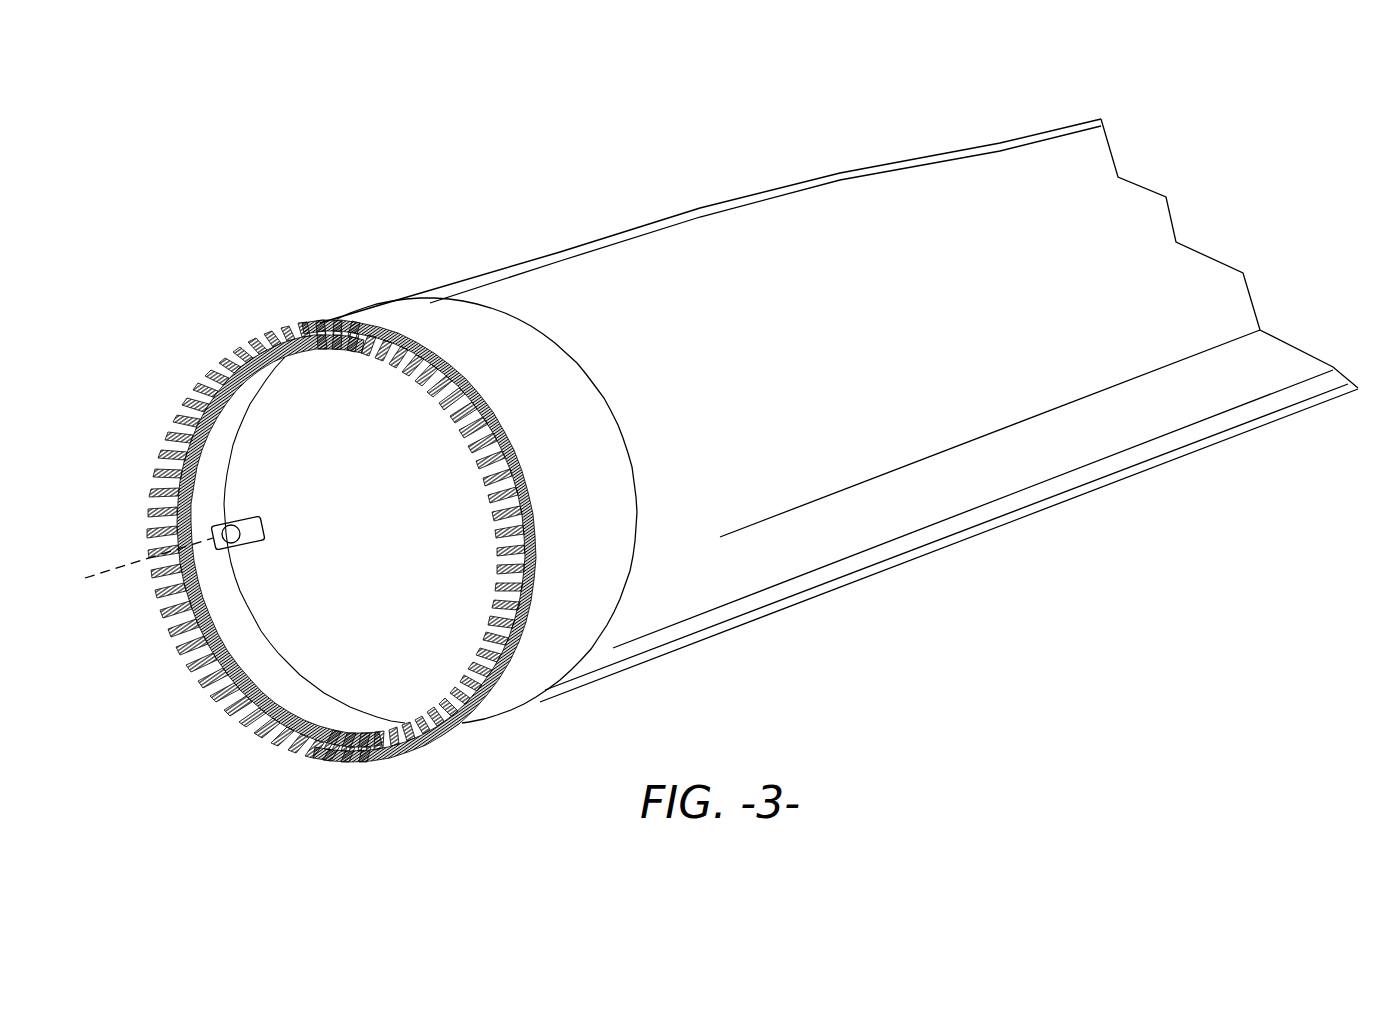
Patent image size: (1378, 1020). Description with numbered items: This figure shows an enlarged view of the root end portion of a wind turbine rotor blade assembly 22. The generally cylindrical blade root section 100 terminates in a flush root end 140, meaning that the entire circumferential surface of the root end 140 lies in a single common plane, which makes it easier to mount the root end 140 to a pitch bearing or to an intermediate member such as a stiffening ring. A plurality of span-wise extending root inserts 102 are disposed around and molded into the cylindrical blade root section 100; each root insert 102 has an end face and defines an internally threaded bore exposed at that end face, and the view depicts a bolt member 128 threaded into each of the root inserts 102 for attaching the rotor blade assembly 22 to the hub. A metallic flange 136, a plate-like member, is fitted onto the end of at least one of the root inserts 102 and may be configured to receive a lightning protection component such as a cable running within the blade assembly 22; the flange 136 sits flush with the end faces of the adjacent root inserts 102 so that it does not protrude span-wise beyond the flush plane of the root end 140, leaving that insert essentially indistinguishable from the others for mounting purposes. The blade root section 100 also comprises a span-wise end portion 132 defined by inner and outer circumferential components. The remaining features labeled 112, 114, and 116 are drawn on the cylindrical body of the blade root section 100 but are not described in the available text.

The rotor blade assembly 22 is at (791, 387).
The cylindrical blade root section 100 is at (327, 485).
The root inserts 102 is at (540, 578).
The side surface of housing 112 is at (886, 344).
The top edge of housing 114 is at (736, 206).
The bottom edge of housing 116 is at (912, 561).
The bolt member 128 is at (104, 560).
The span-wise end portion 132 is at (585, 484).
The metallic flange 136 is at (262, 529).
The root end 140 is at (496, 411).